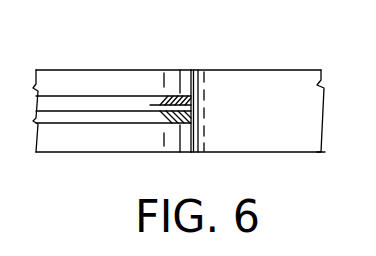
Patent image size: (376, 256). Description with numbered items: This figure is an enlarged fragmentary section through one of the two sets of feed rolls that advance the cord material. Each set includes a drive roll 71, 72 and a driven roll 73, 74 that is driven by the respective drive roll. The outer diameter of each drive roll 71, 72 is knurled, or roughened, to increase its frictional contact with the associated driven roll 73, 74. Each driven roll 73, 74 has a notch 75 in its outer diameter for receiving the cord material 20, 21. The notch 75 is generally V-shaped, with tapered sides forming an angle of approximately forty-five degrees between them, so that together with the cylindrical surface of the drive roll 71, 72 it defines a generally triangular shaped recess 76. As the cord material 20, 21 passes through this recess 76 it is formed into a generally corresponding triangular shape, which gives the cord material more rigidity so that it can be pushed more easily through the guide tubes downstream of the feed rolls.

The cord material 20 is at (166, 83).
The cord material 21 is at (190, 95).
The drive roll 71 is at (258, 94).
The drive roll 72 is at (277, 77).
The driven roll 73 is at (112, 94).
The driven roll 74 is at (62, 80).
The notch 75 is at (163, 122).
The triangular shaped recess 76 is at (157, 100).